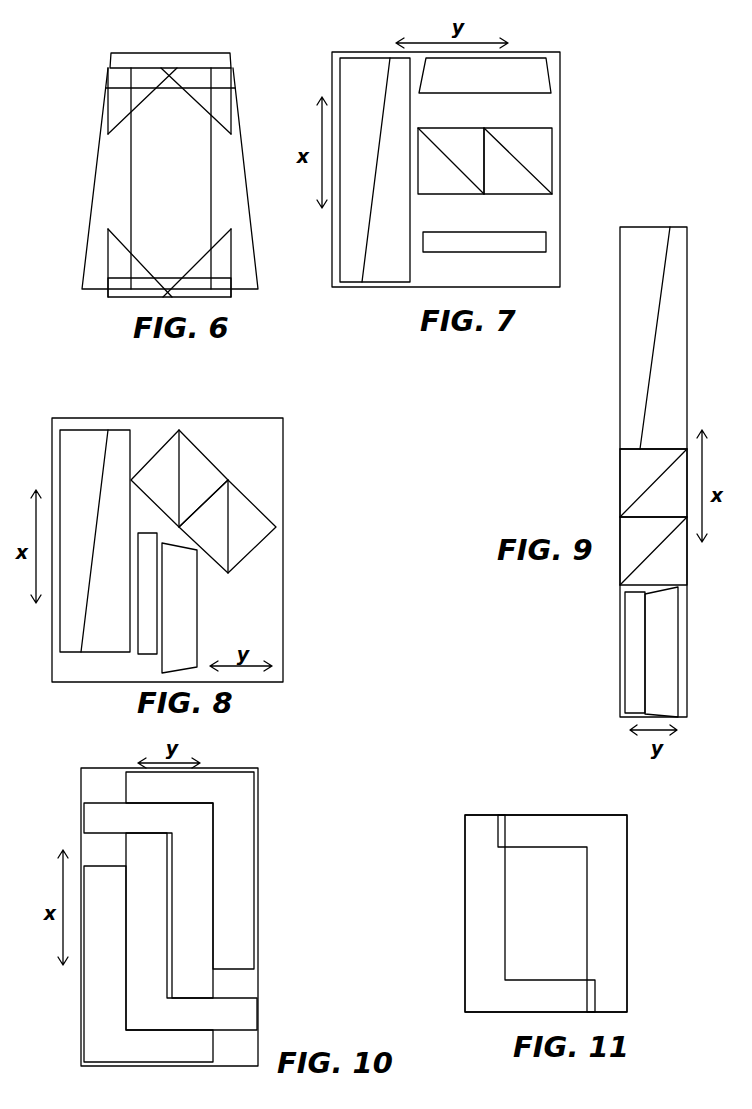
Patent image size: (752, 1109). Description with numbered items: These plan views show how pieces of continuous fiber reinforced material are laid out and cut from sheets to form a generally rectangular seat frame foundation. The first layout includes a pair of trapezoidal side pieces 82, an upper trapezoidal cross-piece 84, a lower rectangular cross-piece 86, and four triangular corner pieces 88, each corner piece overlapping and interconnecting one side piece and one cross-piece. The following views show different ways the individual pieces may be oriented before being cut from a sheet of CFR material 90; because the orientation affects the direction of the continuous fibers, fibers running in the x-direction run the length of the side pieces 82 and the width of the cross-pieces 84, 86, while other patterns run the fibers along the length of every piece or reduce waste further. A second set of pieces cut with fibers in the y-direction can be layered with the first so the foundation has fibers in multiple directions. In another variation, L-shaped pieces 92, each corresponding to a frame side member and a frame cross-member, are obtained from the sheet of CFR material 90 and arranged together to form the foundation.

In FIG. 6, the trapezoidal side piece 82 is at (211, 178).
In FIG. 7, the trapezoidal side piece 82 is at (375, 170).
In FIG. 8, the trapezoidal side piece 82 is at (95, 541).
In FIG. 9, the trapezoidal side piece 82 is at (653, 338).
In FIG. 6, the upper trapezoidal cross-piece 84 is at (141, 53).
In FIG. 7, the upper trapezoidal cross-piece 84 is at (485, 75).
In FIG. 8, the upper trapezoidal cross-piece 84 is at (179, 608).
In FIG. 9, the upper trapezoidal cross-piece 84 is at (661, 652).
In FIG. 6, the lower rectangular cross-piece 86 is at (118, 299).
In FIG. 7, the lower rectangular cross-piece 86 is at (484, 242).
In FIG. 8, the lower rectangular cross-piece 86 is at (148, 647).
In FIG. 9, the lower rectangular cross-piece 86 is at (637, 653).
In FIG. 6, the triangular corner piece 88 is at (118, 129).
In FIG. 7, the triangular corner piece 88 is at (485, 161).
In FIG. 8, the triangular corner piece 88 is at (203, 501).
In FIG. 9, the triangular corner piece 88 is at (653, 517).
In FIG. 7, the sheet of CFR material 90 is at (550, 113).
In FIG. 8, the sheet of CFR material 90 is at (277, 462).
In FIG. 9, the sheet of CFR material 90 is at (620, 713).
In FIG. 10, the sheet of CFR material 90 is at (93, 785).
In FIG. 10, the L-shaped piece 92 is at (170, 917).
In FIG. 11, the L-shaped piece 92 is at (546, 913).